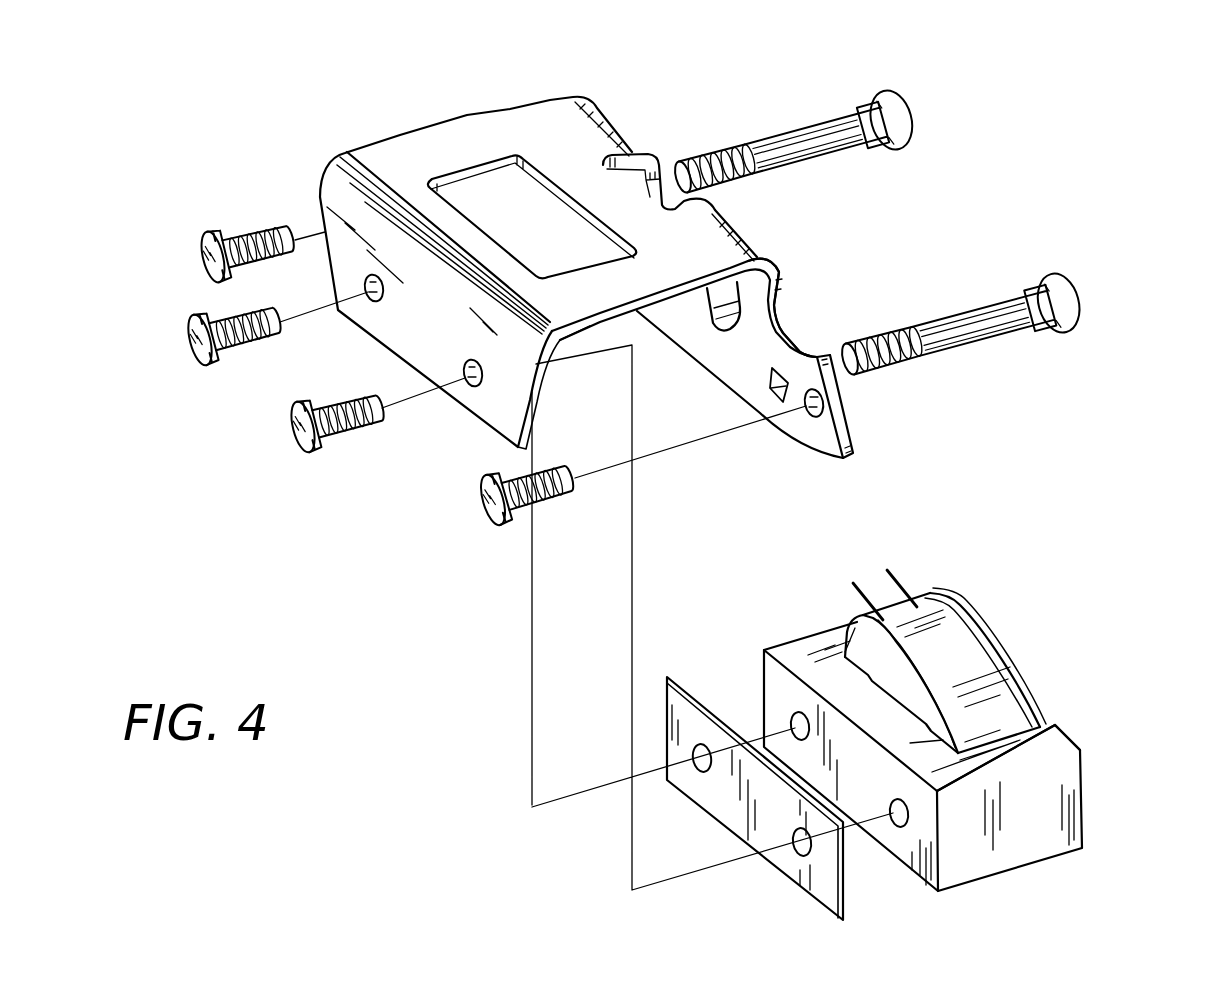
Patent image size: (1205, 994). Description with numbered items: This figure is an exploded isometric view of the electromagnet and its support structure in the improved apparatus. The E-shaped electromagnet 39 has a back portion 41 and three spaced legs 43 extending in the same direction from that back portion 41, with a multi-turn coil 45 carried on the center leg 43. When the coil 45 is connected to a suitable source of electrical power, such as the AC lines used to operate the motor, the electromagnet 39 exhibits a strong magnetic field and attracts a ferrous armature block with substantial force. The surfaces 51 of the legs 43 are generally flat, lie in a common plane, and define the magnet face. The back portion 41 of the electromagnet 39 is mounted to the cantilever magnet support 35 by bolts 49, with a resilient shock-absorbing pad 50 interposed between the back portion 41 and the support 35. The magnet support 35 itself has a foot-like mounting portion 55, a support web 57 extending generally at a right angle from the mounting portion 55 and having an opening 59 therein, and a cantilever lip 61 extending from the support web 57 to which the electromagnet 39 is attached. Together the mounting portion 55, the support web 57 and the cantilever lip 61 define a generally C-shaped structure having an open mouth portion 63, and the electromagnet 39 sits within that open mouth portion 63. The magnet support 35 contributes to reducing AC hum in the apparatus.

The magnet support 35 is at (607, 286).
The electromagnet 39 is at (935, 755).
The back portion 41 is at (800, 677).
The legs 43 is at (830, 637).
The multi-turn coil 45 is at (953, 630).
The bolts 49 is at (238, 350).
The resilient shock-absorbing pad 50 is at (845, 887).
The surfaces of the legs 51 is at (1057, 733).
The mounting portion 55 is at (783, 317).
The support web 57 is at (537, 125).
The opening 59 is at (480, 193).
The cantilever lip 61 is at (410, 343).
The open mouth portion 63 is at (682, 403).